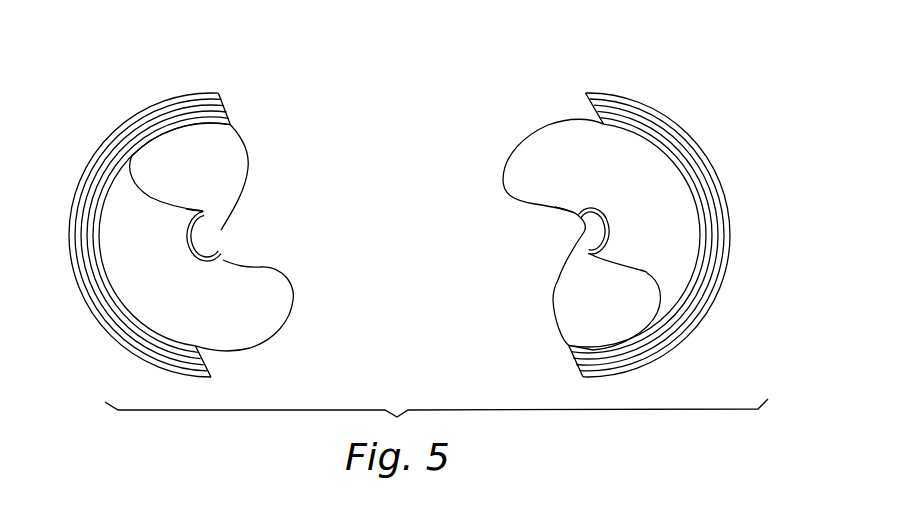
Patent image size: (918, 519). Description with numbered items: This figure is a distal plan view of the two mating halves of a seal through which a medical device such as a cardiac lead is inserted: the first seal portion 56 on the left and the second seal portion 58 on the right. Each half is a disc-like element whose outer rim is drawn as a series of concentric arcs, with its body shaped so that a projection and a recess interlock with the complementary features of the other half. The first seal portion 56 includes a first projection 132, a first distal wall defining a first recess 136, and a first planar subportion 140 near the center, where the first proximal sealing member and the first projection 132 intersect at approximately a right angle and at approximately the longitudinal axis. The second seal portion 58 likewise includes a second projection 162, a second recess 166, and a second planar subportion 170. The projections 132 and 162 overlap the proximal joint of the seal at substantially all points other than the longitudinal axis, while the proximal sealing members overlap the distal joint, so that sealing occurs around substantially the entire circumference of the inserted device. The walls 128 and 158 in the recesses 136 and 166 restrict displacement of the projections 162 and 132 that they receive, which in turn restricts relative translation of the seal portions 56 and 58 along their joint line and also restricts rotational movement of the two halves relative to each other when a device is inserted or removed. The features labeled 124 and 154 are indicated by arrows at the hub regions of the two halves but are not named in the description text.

The first seal portion 56 is at (91, 86).
The second seal portion 58 is at (755, 102).
The first recess 136 is at (232, 150).
The notch at hub of first disc 124 is at (205, 206).
The first planar subportion 140 is at (215, 244).
The wall 128 is at (257, 267).
The first projection 132 is at (270, 317).
The second projection 162 is at (548, 137).
The wall 158 is at (558, 208).
The second planar subportion 170 is at (587, 230).
The notch at hub of second disc 154 is at (596, 264).
The second recess 166 is at (575, 328).